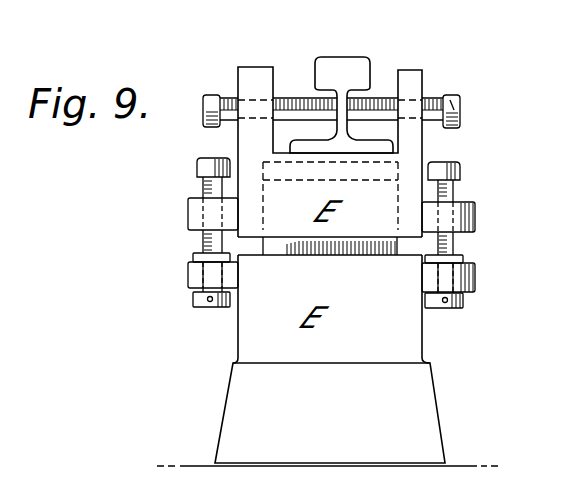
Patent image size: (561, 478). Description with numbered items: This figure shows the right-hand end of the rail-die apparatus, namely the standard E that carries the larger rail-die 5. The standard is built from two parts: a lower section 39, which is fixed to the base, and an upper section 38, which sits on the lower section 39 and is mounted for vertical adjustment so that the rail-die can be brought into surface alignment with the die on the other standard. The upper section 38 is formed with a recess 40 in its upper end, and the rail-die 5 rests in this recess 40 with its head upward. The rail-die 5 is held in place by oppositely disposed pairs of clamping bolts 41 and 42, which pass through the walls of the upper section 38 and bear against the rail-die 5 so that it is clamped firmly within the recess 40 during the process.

The rail-die 5 is at (348, 63).
The upper section 38 is at (407, 165).
The lower section 39 is at (405, 312).
The recess 40 is at (293, 87).
The clamping bolts 41 is at (203, 121).
The clamping bolts 42 is at (459, 100).